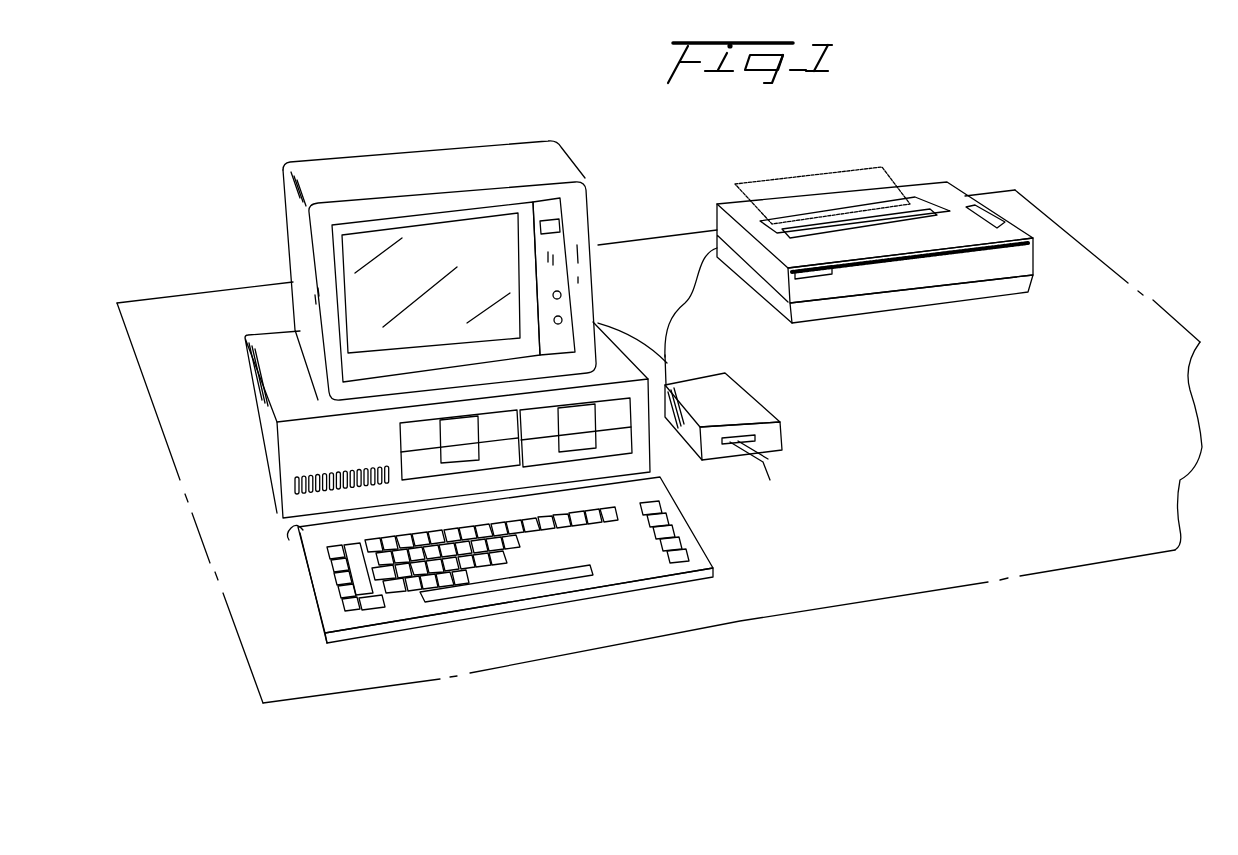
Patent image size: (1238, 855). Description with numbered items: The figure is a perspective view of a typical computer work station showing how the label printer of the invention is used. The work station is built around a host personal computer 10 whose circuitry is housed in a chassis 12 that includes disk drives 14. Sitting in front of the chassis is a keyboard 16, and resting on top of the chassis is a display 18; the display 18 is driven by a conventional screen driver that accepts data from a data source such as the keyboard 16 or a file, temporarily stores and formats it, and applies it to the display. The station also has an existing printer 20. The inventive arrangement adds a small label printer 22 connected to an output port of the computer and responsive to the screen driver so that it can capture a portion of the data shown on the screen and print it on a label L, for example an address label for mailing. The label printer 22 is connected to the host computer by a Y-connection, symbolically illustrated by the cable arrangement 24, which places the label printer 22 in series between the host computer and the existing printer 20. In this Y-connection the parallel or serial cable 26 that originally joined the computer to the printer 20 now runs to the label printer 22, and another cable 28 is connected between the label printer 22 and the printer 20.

The host personal computer 10 is at (178, 115).
The chassis 12 is at (259, 350).
The disk drives 14 is at (400, 437).
The keyboard 16 is at (302, 567).
The display 18 is at (482, 143).
The printer 20 is at (936, 178).
The label printer 22 is at (753, 406).
The cable arrangement 24 is at (667, 360).
The parallel (or serial) cable 26 is at (623, 335).
The cable 28 is at (697, 307).